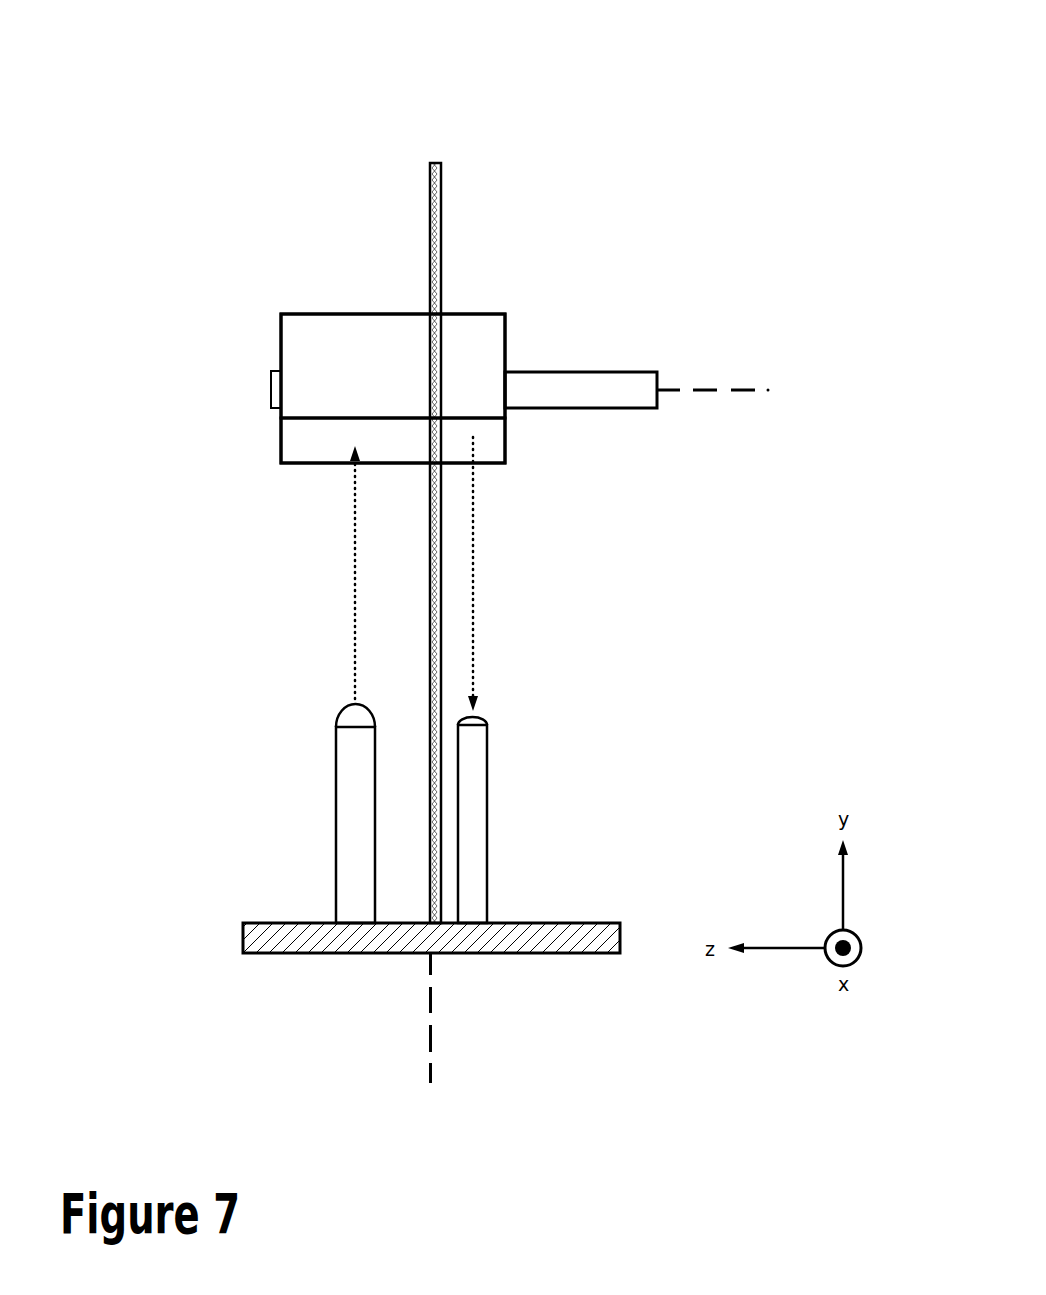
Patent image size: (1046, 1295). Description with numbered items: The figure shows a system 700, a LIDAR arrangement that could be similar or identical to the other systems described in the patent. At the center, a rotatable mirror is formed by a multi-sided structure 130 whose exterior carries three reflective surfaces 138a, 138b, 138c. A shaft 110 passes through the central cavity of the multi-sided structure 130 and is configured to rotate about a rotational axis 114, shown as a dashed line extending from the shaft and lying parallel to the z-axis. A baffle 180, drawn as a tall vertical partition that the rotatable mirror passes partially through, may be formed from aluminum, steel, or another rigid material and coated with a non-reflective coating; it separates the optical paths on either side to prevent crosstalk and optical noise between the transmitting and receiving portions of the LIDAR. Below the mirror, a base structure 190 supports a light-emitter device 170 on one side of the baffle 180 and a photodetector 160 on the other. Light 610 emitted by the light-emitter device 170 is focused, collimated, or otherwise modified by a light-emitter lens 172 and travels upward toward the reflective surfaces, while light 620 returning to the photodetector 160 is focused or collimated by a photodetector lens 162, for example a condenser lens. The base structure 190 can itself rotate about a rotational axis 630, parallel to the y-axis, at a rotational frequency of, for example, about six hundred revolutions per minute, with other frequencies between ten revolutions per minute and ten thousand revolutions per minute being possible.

The system 700 is at (747, 92).
The baffle 180 is at (440, 240).
The reflective surface 138c is at (308, 300).
The reflective surface 138b is at (325, 314).
The reflective surface 138a is at (318, 465).
The multi-sided structure 130 is at (506, 467).
The shaft 110 is at (618, 408).
The rotational axis 114 is at (743, 391).
The light 610 is at (354, 642).
The light 620 is at (475, 566).
The light-emitter device 170 is at (336, 840).
The light-emitter lens 172 is at (340, 715).
The photodetector 160 is at (488, 857).
The photodetector lens 162 is at (480, 720).
The base structure 190 is at (338, 953).
The rotational axis 630 is at (430, 1055).